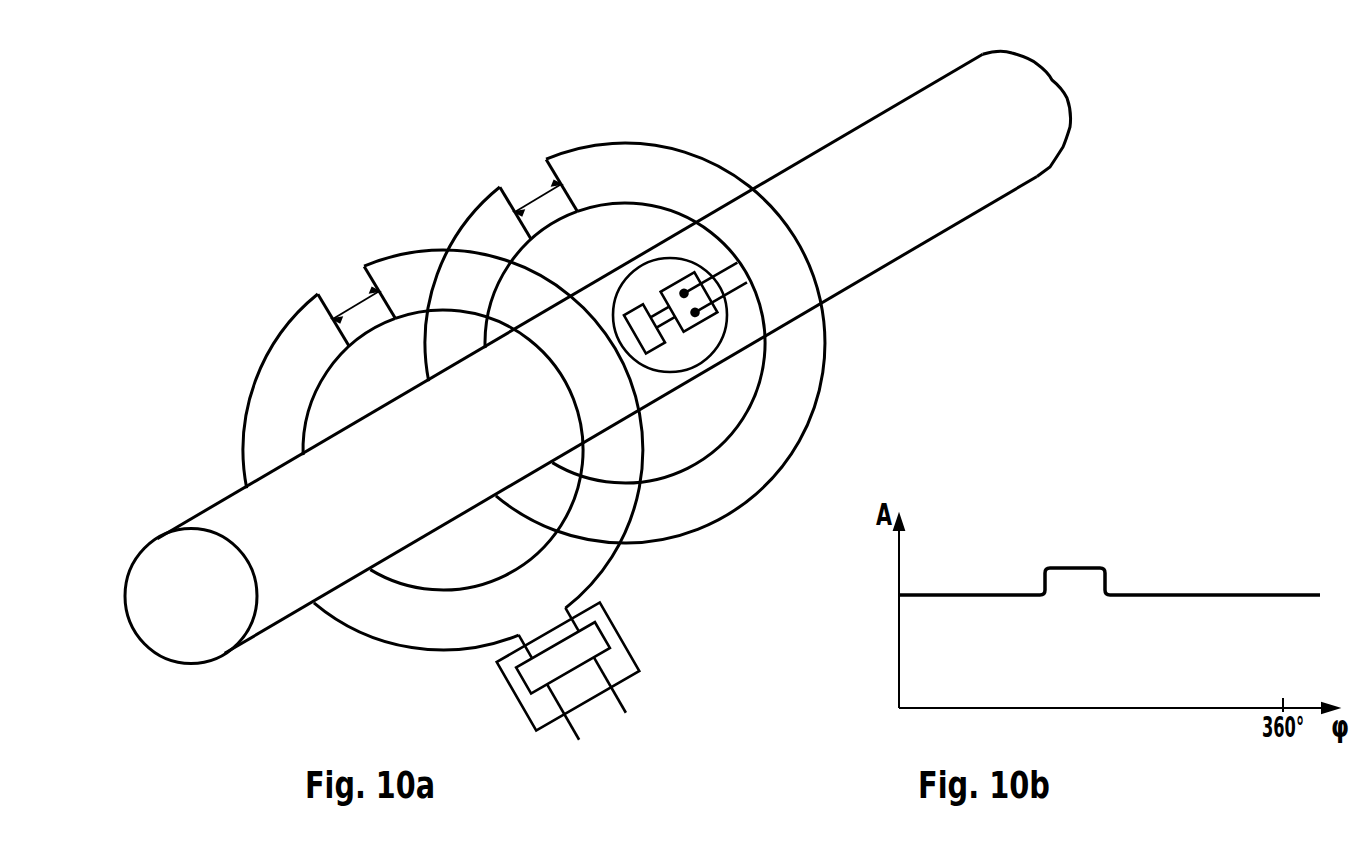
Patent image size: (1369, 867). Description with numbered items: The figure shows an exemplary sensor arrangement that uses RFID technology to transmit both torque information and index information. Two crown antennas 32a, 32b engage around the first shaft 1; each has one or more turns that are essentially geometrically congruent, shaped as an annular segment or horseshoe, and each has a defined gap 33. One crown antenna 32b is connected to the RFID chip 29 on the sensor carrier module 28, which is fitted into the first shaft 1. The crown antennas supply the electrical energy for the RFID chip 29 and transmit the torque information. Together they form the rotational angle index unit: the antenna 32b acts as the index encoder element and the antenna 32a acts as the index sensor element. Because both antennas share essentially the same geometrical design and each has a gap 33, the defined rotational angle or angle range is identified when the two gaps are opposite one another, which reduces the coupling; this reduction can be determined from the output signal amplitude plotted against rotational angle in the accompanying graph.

The first shaft 1 is at (967, 173).
The sensor carrier module 28 is at (700, 342).
The RFID chip 29 is at (683, 293).
The crown antenna 32a is at (268, 347).
The crown antenna 32b is at (690, 147).
The gap 33 is at (353, 297).